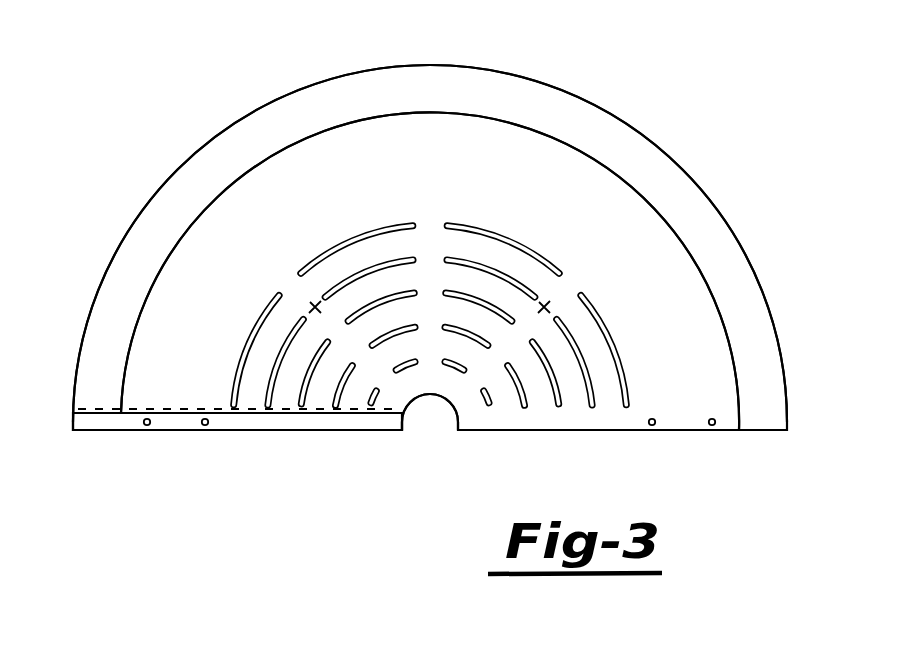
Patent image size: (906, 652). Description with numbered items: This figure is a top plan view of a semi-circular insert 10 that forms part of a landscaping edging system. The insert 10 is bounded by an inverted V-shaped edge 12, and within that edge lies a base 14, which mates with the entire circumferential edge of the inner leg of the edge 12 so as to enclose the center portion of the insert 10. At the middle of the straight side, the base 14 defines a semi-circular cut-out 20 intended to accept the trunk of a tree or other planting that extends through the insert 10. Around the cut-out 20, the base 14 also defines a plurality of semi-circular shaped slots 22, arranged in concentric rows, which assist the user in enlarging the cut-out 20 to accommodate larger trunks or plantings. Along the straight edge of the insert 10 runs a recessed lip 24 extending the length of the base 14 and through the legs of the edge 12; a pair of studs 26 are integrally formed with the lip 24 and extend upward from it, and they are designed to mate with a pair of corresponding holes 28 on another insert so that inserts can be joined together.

The semi-circular insert 10 is at (653, 78).
The inverted V-shaped edge 12 is at (617, 150).
The base 14 is at (677, 350).
The semi-circular cut-out 20 is at (408, 410).
The semi-circular shaped slots 22 is at (520, 240).
The recessed lip 24 is at (280, 420).
The studs 26 is at (148, 431).
The holes 28 is at (649, 428).